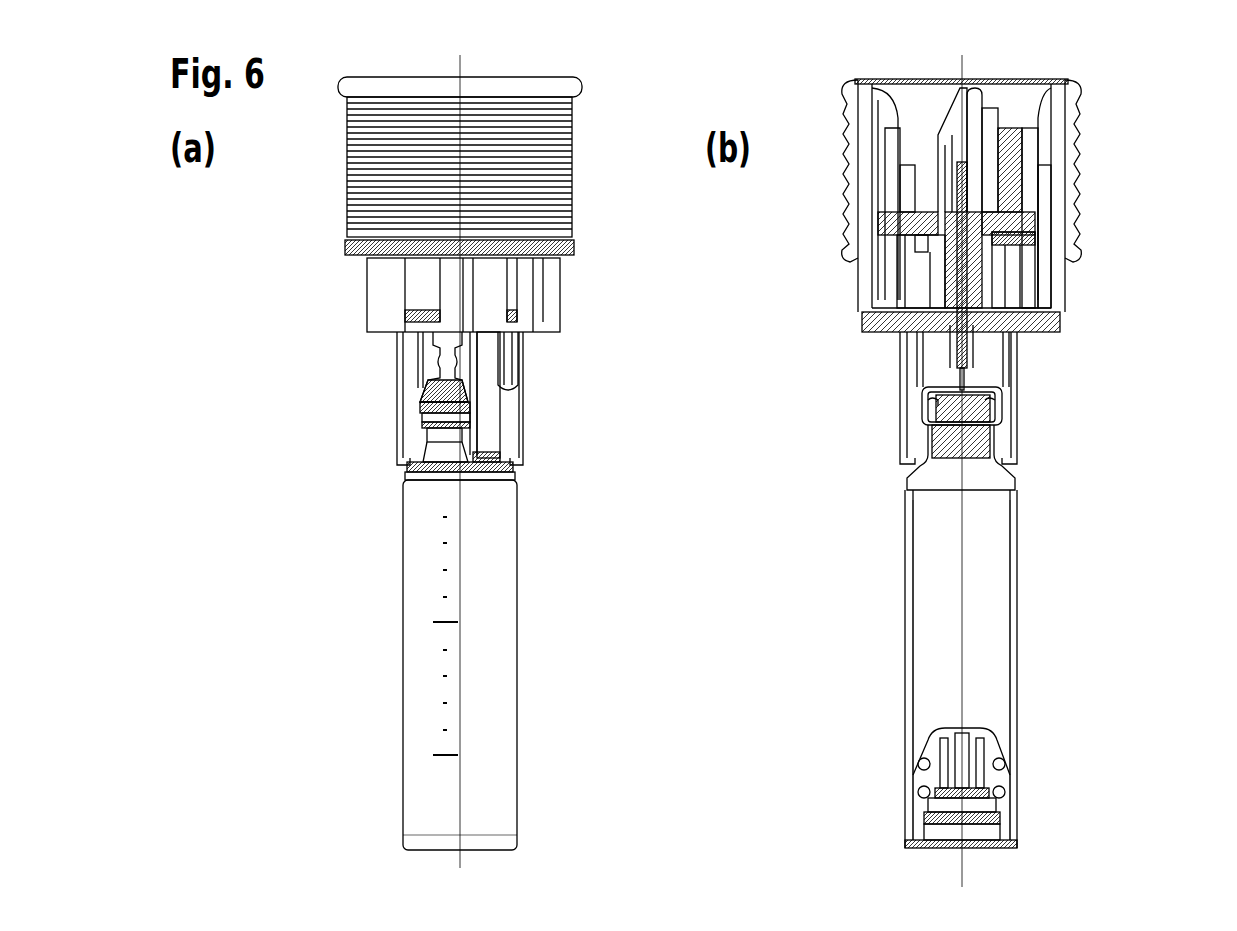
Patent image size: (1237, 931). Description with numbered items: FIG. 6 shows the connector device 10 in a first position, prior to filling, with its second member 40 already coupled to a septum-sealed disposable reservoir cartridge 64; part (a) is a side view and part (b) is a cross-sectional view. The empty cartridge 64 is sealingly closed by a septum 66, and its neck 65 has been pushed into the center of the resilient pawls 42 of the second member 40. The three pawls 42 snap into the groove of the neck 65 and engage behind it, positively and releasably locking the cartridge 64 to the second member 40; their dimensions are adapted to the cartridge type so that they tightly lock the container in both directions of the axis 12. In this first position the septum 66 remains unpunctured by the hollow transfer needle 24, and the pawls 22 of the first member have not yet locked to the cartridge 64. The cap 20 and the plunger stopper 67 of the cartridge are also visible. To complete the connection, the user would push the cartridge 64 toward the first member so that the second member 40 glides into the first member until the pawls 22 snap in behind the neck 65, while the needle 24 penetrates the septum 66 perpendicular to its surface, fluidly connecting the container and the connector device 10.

The connector device 10 is at (787, 318).
The axis 12 is at (901, 670).
The cap 20 is at (769, 192).
The pawls of the first member 22 is at (468, 389).
The hollow transfer needle 24 is at (1032, 291).
The second member 40 is at (642, 358).
The pawls 42 is at (708, 435).
The cartridge 64 is at (640, 665).
The neck 65 is at (642, 476).
The septum 66 is at (1029, 451).
The plunger stopper 67 is at (889, 784).